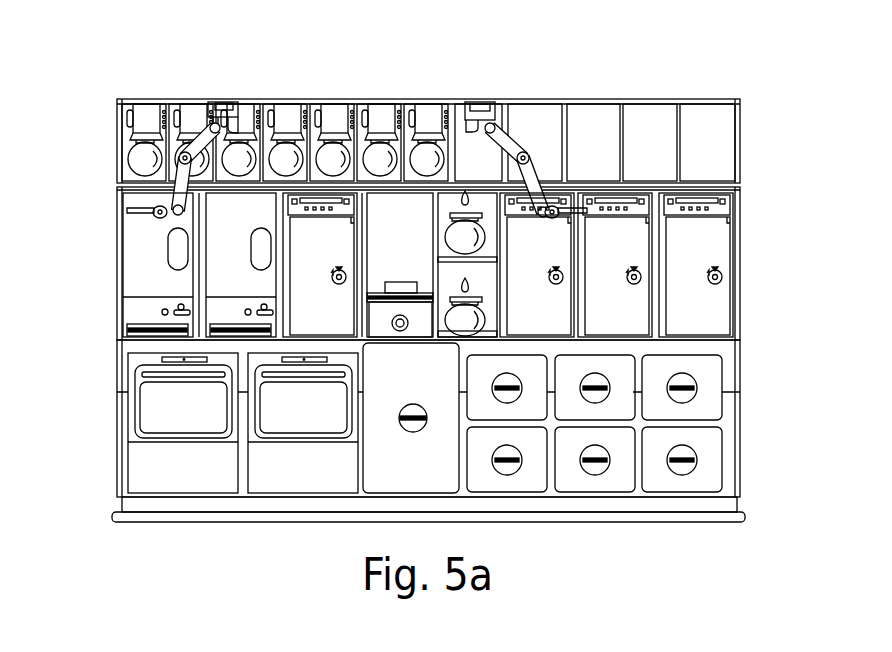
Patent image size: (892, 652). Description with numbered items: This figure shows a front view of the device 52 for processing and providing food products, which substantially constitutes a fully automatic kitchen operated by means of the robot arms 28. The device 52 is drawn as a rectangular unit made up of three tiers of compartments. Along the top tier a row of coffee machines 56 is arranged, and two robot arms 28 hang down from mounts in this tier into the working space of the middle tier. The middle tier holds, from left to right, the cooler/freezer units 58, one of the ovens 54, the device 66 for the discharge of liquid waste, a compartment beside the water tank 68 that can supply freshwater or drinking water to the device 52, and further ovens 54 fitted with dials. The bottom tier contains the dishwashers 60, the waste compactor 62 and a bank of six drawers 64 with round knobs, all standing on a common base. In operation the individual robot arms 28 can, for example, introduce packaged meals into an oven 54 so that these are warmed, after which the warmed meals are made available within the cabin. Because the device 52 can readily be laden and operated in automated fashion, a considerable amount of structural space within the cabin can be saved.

The device for processing and providing food products 52 is at (340, 80).
The coffee machines 56 is at (127, 143).
The flat water tank 68 is at (473, 192).
The robot arms 28 is at (537, 148).
The cooler/freezer units 58 is at (133, 267).
The ovens 54 is at (723, 247).
The device for the discharge of liquid waste 66 is at (378, 317).
The dishwashers 60 is at (133, 482).
The waste compactor 62 is at (429, 384).
The drawers 64 is at (708, 405).